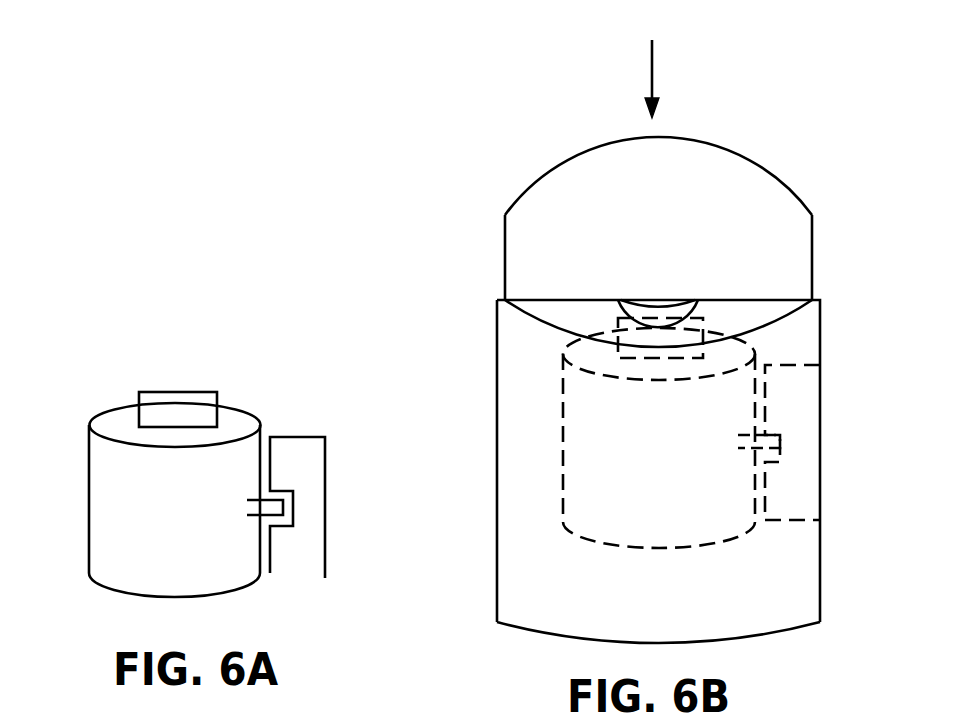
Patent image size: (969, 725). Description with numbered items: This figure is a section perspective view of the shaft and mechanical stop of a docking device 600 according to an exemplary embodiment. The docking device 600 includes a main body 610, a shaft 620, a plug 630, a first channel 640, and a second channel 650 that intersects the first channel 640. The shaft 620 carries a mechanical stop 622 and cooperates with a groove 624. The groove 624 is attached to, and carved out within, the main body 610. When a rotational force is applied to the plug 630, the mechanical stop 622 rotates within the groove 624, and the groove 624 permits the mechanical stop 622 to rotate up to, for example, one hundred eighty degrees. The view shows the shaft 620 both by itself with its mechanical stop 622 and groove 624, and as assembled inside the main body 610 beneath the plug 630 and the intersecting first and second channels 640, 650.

In FIG. 6B, the docking device 600 is at (644, 63).
In FIG. 6B, the main body 610 is at (523, 367).
In FIG. 6A, the shaft 620 is at (135, 500).
In FIG. 6B, the shaft 620 is at (602, 473).
In FIG. 6A, the mechanical stop 622 is at (258, 515).
In FIG. 6B, the mechanical stop 622 is at (757, 447).
In FIG. 6A, the groove 624 is at (300, 470).
In FIG. 6B, the groove 624 is at (802, 393).
In FIG. 6A, the plug 630 is at (152, 418).
In FIG. 6B, the plug 630 is at (618, 336).
In FIG. 6B, the first channel 640 is at (787, 260).
In FIG. 6B, the second channel 650 is at (693, 311).